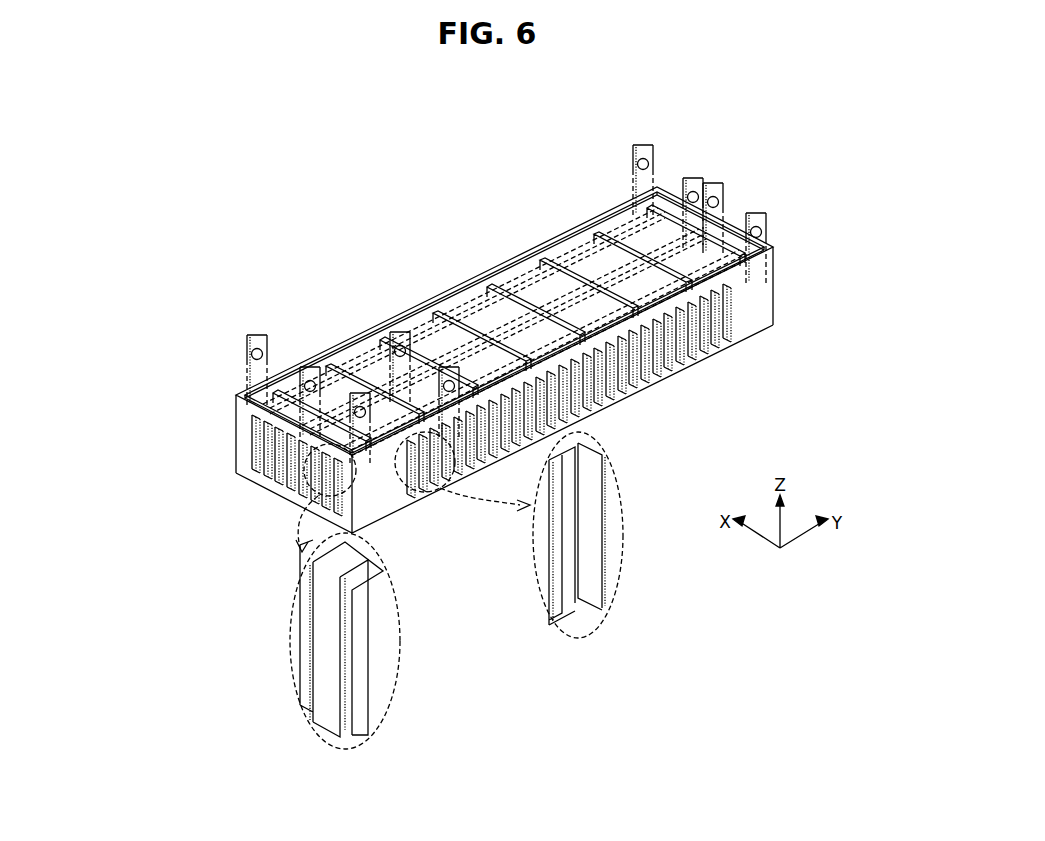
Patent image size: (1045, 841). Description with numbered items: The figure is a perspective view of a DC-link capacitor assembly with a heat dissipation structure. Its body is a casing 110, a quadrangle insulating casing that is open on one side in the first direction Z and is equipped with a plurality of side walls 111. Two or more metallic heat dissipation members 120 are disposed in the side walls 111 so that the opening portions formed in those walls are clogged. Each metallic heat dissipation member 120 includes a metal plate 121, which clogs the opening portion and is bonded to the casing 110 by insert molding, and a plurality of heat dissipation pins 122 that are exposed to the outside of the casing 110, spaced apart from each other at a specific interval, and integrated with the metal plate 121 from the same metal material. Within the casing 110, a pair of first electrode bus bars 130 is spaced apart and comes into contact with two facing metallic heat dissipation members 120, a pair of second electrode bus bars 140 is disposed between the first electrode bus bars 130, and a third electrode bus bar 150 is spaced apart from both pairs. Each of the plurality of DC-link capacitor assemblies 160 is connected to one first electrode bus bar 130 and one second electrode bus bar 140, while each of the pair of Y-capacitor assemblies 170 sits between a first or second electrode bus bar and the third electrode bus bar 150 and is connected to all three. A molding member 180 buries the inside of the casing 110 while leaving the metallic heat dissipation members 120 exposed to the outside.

The casing 110 is at (228, 440).
The side wall 111 is at (418, 304).
The metallic heat dissipation member 120 is at (268, 492).
The metal plate 121 is at (352, 630).
The heat dissipation pin 122 is at (238, 478).
The first electrode bus bar 130 is at (660, 150).
The second electrode bus bar 140 is at (700, 178).
The third electrode bus bar 150 is at (310, 350).
The DC-link capacitor assembly 160 is at (625, 210).
The Y-capacitor assembly 170 is at (330, 343).
The molding member 180 is at (440, 300).